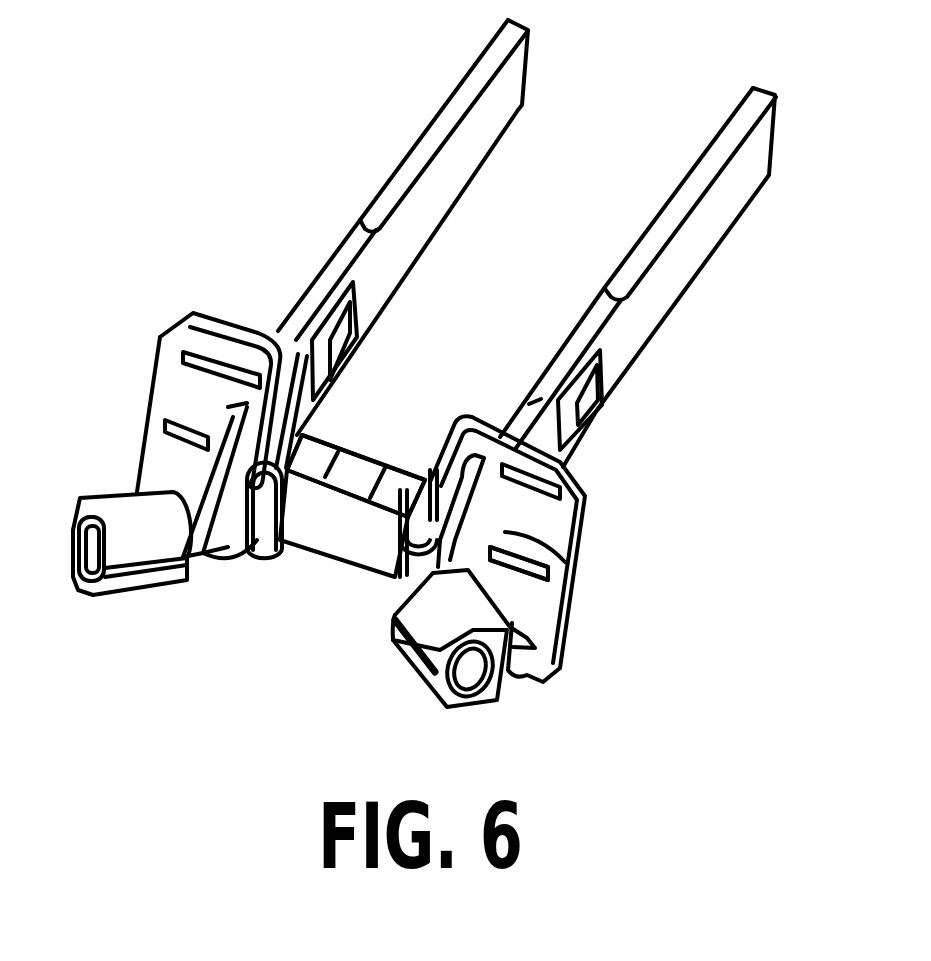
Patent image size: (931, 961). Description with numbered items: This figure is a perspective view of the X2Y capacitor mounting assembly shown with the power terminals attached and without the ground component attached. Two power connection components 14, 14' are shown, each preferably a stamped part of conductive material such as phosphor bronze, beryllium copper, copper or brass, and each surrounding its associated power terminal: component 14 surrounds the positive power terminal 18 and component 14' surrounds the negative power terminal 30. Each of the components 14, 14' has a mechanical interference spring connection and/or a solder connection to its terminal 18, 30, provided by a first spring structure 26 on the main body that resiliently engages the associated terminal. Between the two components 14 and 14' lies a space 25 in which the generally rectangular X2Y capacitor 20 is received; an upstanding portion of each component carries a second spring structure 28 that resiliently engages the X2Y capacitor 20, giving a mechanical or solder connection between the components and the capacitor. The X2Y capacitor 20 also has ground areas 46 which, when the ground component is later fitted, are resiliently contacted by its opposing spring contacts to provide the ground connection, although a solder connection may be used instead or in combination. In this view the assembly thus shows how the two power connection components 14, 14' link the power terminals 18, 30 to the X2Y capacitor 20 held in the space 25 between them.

The power connection component 14 is at (171, 454).
The power connection component 14' is at (533, 561).
The positive power terminal 18 is at (435, 130).
The X2Y capacitor 20 is at (310, 523).
The space 25 is at (485, 312).
The first spring structure 26 is at (570, 560).
The second spring structure 28 is at (253, 537).
The negative power terminal 30 is at (712, 213).
The ground areas 46 is at (358, 477).